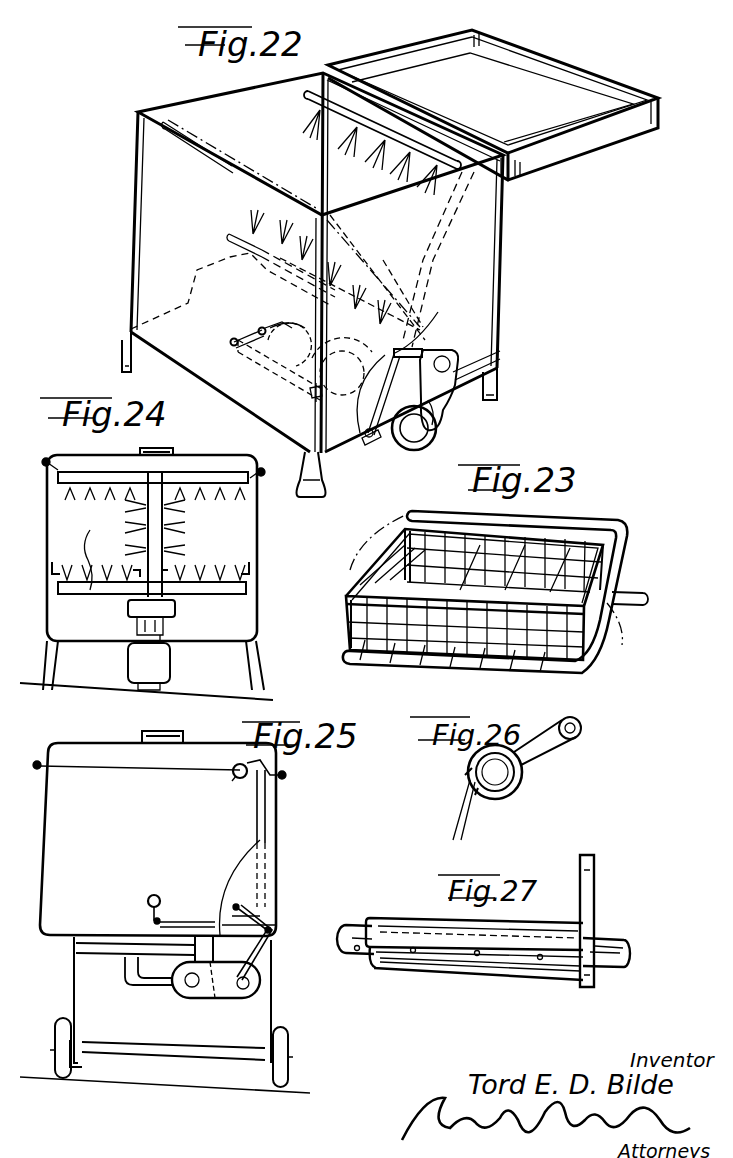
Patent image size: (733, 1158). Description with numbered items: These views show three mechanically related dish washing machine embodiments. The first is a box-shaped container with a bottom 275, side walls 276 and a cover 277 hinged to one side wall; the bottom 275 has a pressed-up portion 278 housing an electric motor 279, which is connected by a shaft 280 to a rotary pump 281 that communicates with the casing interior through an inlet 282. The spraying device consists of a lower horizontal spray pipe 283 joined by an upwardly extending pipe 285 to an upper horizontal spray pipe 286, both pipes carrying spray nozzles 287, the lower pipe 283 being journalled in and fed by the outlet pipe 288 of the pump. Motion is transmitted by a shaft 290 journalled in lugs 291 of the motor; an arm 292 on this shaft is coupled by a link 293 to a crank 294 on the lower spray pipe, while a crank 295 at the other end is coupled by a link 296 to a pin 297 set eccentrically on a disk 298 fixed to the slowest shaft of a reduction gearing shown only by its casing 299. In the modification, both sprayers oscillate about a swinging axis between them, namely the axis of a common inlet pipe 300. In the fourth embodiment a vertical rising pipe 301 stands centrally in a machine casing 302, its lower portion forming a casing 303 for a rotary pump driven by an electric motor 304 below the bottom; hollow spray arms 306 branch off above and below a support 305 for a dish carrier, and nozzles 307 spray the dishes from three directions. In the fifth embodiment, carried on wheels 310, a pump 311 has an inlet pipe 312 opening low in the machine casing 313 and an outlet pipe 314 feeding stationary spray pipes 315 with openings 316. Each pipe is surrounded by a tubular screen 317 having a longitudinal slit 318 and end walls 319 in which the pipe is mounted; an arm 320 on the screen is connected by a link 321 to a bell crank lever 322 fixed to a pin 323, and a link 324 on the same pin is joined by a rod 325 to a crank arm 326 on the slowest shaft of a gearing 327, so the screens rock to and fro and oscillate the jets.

In FIG. 22, the bottom 275 is at (172, 348).
In FIG. 22, the side walls 276 is at (215, 108).
In FIG. 22, the cover 277 is at (612, 138).
In FIG. 22, the pressed-up portion 278 is at (210, 265).
In FIG. 22, the electric motor 279 is at (280, 358).
In FIG. 22, the shaft 280 is at (368, 345).
In FIG. 22, the rotary pump 281 is at (415, 450).
In FIG. 22, the inlet 282 is at (448, 410).
In FIG. 22, the lower horizontal spray pipe 283 is at (398, 290).
In FIG. 23, the lower horizontal spray pipe 283 is at (495, 665).
In FIG. 22, the upwardly extending pipe 285 is at (456, 228).
In FIG. 22, the upper horizontal spray pipe 286 is at (382, 112).
In FIG. 23, the upper horizontal spray pipe 286 is at (590, 523).
In FIG. 22, the spray nozzles 287 is at (306, 97).
In FIG. 22, the outlet pipe 288 is at (498, 354).
In FIG. 22, the shaft 290 is at (367, 428).
In FIG. 22, the lugs 291 is at (313, 398).
In FIG. 22, the arm 292 is at (375, 440).
In FIG. 22, the link 293 is at (420, 355).
In FIG. 22, the crank 294 is at (430, 322).
In FIG. 22, the crank 295 is at (234, 348).
In FIG. 22, the link 296 is at (246, 337).
In FIG. 22, the pin 297 is at (263, 328).
In FIG. 22, the disk 298 is at (282, 330).
In FIG. 22, the casing 299 is at (305, 328).
In FIG. 23, the common inlet pipe 300 is at (632, 592).
In FIG. 24, the vertical rising pipe 301 is at (165, 520).
In FIG. 24, the machine casing 302 is at (256, 534).
In FIG. 24, the casing 303 is at (176, 604).
In FIG. 24, the electric motor 304 is at (170, 666).
In FIG. 24, the support 305 is at (252, 572).
In FIG. 24, the spray arms 306 is at (80, 470).
In FIG. 24, the nozzles 307 is at (118, 508).
In FIG. 25, the wheels 310 is at (283, 1035).
In FIG. 25, the pump 311 is at (185, 998).
In FIG. 25, the inlet pipe 312 is at (138, 985).
In FIG. 25, the machine casing 313 is at (46, 866).
In FIG. 25, the outlet pipe 314 is at (196, 938).
In FIG. 25, the spray pipes 315 is at (240, 778).
In FIG. 26, the spray pipes 315 is at (508, 790).
In FIG. 27, the spray pipes 315 is at (355, 925).
In FIG. 26, the nozzles or openings 316 is at (470, 770).
In FIG. 27, the nozzles or openings 316 is at (357, 952).
In FIG. 25, the tubular screen 317 is at (240, 768).
In FIG. 26, the tubular screen 317 is at (520, 783).
In FIG. 27, the tubular screen 317 is at (420, 920).
In FIG. 25, the longitudinal slit 318 is at (232, 778).
In FIG. 27, the longitudinal slit 318 is at (558, 952).
In FIG. 26, the end walls 319 is at (505, 797).
In FIG. 27, the end walls 319 is at (597, 942).
In FIG. 25, the arm 320 is at (280, 760).
In FIG. 26, the arm 320 is at (550, 748).
In FIG. 27, the arm 320 is at (594, 880).
In FIG. 25, the link 321 is at (268, 800).
In FIG. 25, the bell crank lever 322 is at (268, 882).
In FIG. 25, the pin 323 is at (232, 905).
In FIG. 25, the link 324 is at (270, 905).
In FIG. 25, the rod 325 is at (252, 962).
In FIG. 25, the crank arm 326 is at (242, 995).
In FIG. 25, the gearing 327 is at (215, 1002).